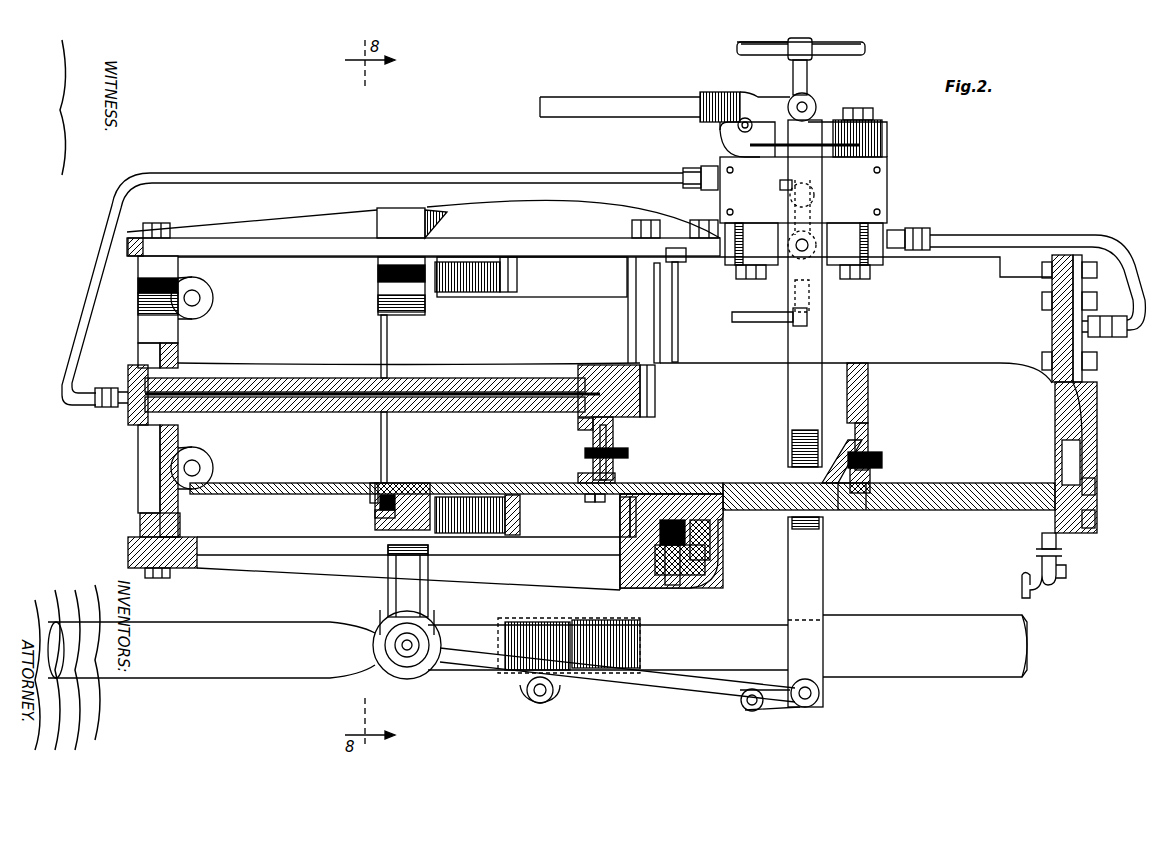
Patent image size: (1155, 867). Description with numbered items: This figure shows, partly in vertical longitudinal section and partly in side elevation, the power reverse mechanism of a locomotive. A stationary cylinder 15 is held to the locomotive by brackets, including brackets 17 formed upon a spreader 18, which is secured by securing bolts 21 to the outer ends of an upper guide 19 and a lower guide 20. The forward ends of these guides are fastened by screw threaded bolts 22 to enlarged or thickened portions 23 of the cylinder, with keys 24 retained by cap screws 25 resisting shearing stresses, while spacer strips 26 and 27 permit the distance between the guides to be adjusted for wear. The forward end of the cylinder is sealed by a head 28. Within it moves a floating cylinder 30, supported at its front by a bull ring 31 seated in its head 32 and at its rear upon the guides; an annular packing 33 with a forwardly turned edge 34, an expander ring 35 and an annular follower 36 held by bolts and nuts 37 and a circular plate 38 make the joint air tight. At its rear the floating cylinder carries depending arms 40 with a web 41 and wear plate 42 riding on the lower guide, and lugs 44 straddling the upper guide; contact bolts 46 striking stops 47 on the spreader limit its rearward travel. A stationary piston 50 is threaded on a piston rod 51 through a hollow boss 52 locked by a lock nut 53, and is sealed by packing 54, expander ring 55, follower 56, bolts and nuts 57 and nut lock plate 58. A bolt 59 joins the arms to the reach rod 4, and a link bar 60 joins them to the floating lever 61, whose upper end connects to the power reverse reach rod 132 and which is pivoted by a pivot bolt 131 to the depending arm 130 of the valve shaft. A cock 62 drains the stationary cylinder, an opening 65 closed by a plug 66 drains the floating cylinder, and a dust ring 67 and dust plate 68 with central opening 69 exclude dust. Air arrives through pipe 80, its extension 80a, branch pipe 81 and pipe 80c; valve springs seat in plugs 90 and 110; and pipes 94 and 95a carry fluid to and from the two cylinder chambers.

The reach rod 4 is at (226, 666).
The cylinder 15 is at (934, 303).
The brackets 17 is at (200, 298).
The spreader 18 is at (176, 357).
The guide 19 is at (294, 250).
The guide 20 is at (276, 540).
The securing bolts 21 is at (162, 228).
The screw threaded bolts 22 is at (632, 228).
The enlarged or thickened portions 23 is at (680, 264).
The keys 24 is at (675, 263).
The cap screws 25 is at (672, 520).
The spacer strips 26 is at (632, 262).
The spacer strips 27 is at (170, 256).
The head 28 is at (1090, 457).
The floating cylinder 30 is at (737, 488).
The bull ring 31 is at (840, 510).
The head 32 is at (868, 398).
The annular packing 33 is at (870, 478).
The forwardly turned edge 34 is at (866, 510).
The expander ring 35 is at (875, 486).
The annular follower 36 is at (870, 450).
The screw threaded bolts and nuts 37 is at (882, 462).
The circular plate 38 is at (868, 430).
The depending arms 40 is at (388, 596).
The web 41 is at (378, 500).
The wear plate 42 is at (378, 514).
The lugs 44 is at (380, 243).
The contact bolts 46 is at (465, 284).
The stops 47 is at (140, 286).
The stationary piston 50 is at (593, 440).
The piston rod 51 is at (295, 376).
The hollow boss 52 is at (642, 408).
The lock nut 53 is at (578, 420).
The packing 54 is at (588, 494).
The expander ring 55 is at (600, 496).
The annular follower 56 is at (612, 446).
The screw threaded bolts and nuts 57 is at (628, 456).
The nut lock plate 58 is at (640, 412).
The bolt 59 is at (373, 650).
The link bar 60 is at (650, 688).
The floating lever 61 is at (812, 585).
The cock 62 is at (1042, 542).
The opening 65 is at (416, 483).
The screw threaded plug 66 is at (378, 488).
The dust ring 67 is at (633, 517).
The dust plate 68 is at (381, 432).
The central opening 69 is at (382, 375).
The pipe 80 is at (830, 42).
The pipe extension 80a is at (768, 28).
The pipe 80c is at (756, 322).
The branch pipe 81 is at (808, 92).
The removable plugs 90 is at (866, 113).
The pipe 94 is at (452, 173).
The pipe 95a is at (962, 238).
The plugs 110 is at (748, 280).
The depending arm 130 is at (815, 214).
The pivot bolt 131 is at (826, 282).
The power reverse reach rod 132 is at (602, 99).